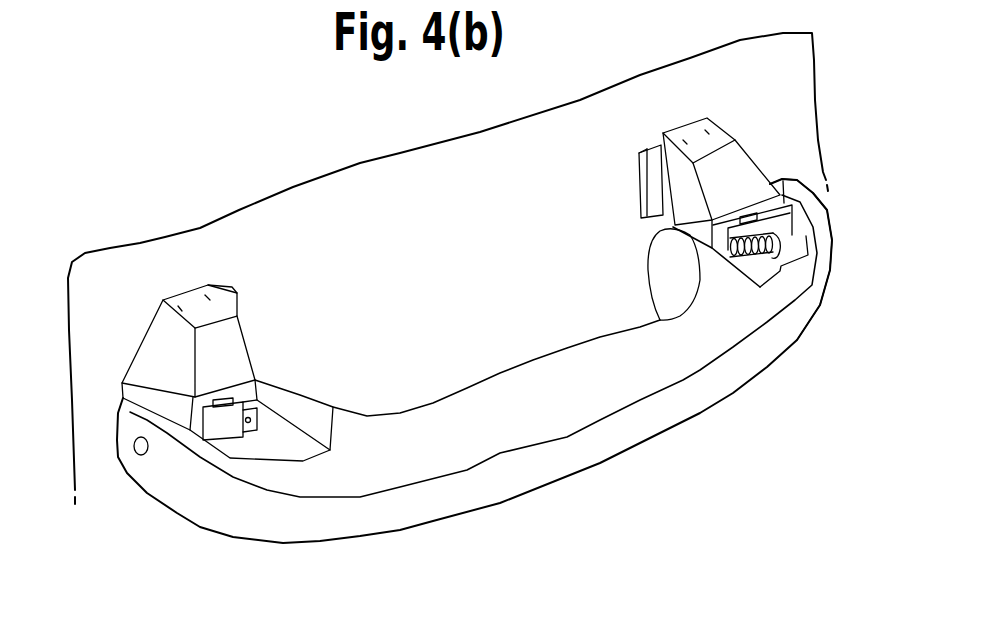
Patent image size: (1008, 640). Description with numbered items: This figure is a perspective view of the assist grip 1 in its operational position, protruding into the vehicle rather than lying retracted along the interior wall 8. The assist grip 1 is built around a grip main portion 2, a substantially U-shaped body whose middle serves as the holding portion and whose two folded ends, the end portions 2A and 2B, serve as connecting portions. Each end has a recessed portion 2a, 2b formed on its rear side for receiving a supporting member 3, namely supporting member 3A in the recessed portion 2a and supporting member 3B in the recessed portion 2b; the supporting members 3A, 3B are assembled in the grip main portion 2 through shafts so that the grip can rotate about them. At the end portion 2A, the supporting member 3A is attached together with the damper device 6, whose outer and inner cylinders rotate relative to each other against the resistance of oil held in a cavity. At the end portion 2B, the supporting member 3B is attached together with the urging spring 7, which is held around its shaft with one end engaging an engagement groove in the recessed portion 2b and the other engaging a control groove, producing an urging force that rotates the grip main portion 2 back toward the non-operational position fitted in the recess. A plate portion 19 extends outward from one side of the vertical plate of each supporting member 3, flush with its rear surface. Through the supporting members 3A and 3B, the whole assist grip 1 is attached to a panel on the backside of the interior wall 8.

The assist grip 1 is at (366, 270).
The grip main portion 2 is at (311, 382).
The end portion 2A is at (187, 490).
The end portion 2B is at (675, 272).
The recessed portion 2a is at (302, 445).
The recessed portion 2b is at (800, 242).
The supporting member 3 is at (735, 174).
The supporting member 3A is at (261, 334).
The supporting member 3B is at (738, 125).
The damper device 6 is at (227, 430).
The urging spring 7 is at (752, 282).
The interior wall 8 is at (427, 176).
The plate portion 19 is at (657, 180).